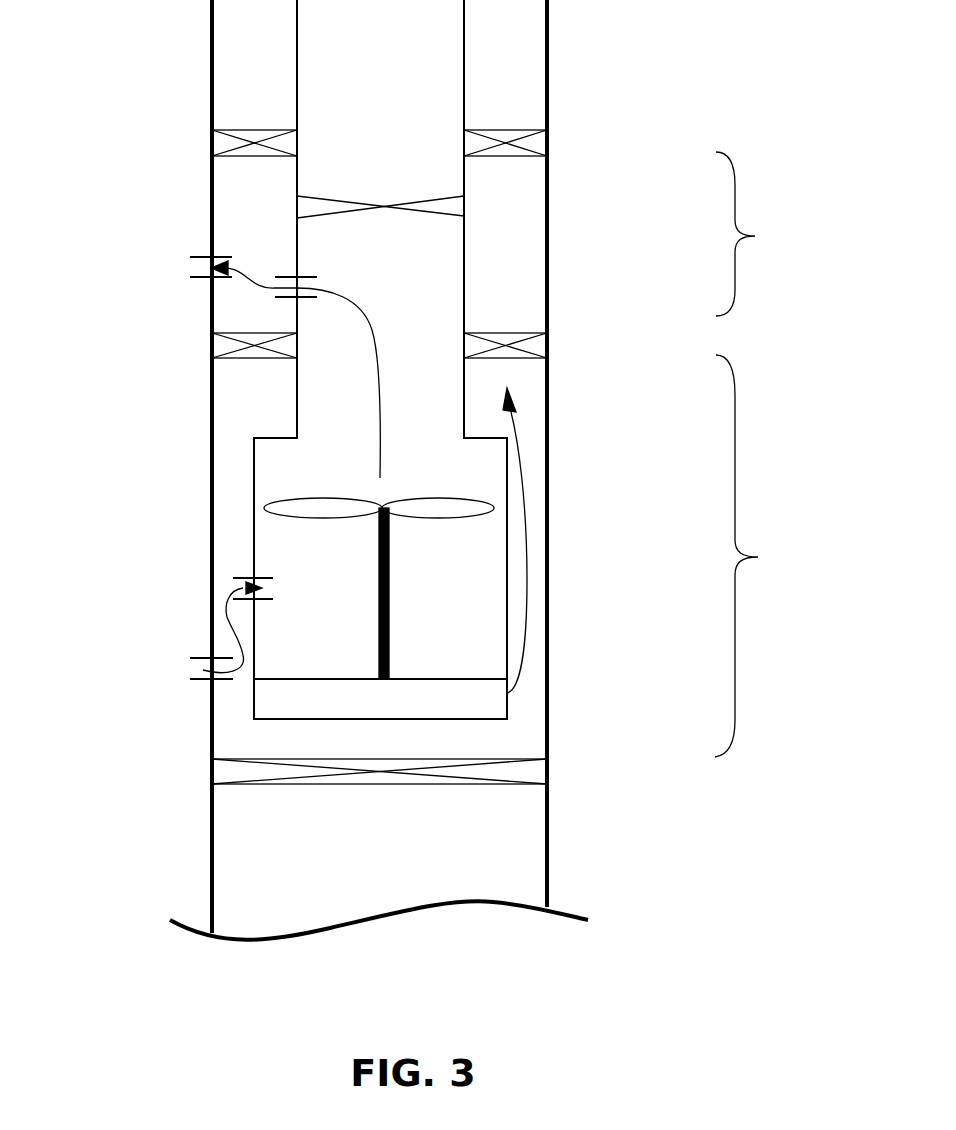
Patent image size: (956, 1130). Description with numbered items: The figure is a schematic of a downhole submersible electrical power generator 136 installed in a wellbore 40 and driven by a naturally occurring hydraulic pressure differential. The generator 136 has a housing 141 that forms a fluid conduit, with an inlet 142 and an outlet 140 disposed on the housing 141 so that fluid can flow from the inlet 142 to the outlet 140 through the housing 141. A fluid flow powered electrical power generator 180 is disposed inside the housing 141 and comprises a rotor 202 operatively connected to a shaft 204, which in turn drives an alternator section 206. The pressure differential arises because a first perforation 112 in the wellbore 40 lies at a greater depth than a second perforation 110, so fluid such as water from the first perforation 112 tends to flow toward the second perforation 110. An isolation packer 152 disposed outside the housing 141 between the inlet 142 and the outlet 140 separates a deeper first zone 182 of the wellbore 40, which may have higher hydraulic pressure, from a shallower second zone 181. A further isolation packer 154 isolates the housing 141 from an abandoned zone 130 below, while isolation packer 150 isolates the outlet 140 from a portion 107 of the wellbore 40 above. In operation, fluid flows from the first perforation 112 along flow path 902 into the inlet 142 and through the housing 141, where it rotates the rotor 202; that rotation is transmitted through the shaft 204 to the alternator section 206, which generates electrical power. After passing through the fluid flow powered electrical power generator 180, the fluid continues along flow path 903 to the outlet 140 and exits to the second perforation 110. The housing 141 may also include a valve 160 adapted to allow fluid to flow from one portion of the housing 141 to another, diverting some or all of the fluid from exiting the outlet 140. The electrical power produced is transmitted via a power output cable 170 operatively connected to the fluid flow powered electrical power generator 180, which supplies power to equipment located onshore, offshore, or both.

The wellbore 40 is at (548, 842).
The portion of the wellbore 107 is at (240, 63).
The second perforation 110 is at (158, 268).
The first perforation 112 is at (160, 670).
The abandoned zone 130 is at (315, 883).
The downhole submersible electrical power generator 136 is at (170, 396).
The outlet 140 is at (278, 312).
The housing 141 is at (254, 478).
The inlet 142 is at (226, 561).
The isolation packer 150 is at (530, 147).
The isolation packer 152 is at (530, 345).
The isolation packer 154 is at (527, 768).
The valve 160 is at (443, 208).
The power output cable 170 is at (525, 570).
The fluid flow powered electrical power generator 180 is at (382, 541).
The second zone 181 is at (771, 234).
The first zone 182 is at (770, 556).
The rotor 202 is at (437, 518).
The shaft 204 is at (392, 617).
The alternator section 206 is at (409, 710).
The flow path 902 is at (227, 617).
The flow path 903 is at (373, 320).